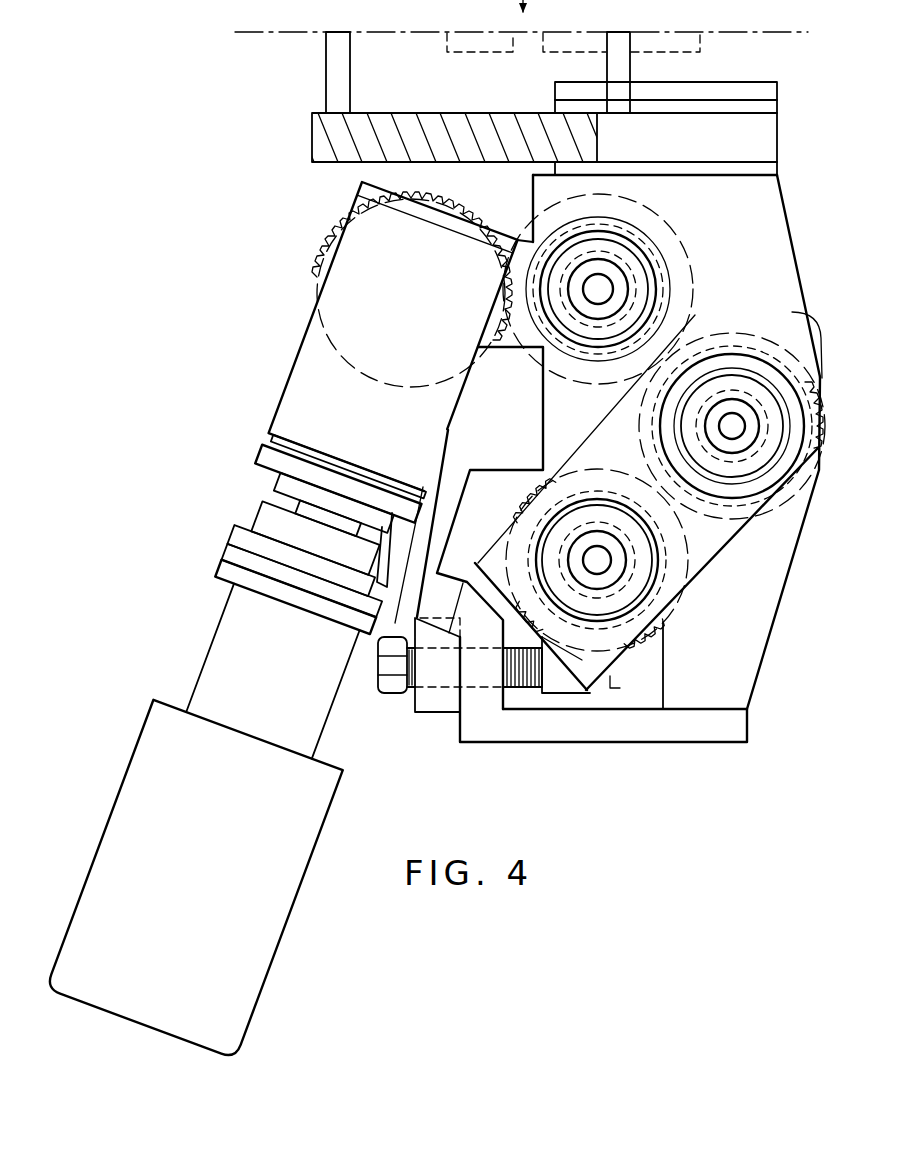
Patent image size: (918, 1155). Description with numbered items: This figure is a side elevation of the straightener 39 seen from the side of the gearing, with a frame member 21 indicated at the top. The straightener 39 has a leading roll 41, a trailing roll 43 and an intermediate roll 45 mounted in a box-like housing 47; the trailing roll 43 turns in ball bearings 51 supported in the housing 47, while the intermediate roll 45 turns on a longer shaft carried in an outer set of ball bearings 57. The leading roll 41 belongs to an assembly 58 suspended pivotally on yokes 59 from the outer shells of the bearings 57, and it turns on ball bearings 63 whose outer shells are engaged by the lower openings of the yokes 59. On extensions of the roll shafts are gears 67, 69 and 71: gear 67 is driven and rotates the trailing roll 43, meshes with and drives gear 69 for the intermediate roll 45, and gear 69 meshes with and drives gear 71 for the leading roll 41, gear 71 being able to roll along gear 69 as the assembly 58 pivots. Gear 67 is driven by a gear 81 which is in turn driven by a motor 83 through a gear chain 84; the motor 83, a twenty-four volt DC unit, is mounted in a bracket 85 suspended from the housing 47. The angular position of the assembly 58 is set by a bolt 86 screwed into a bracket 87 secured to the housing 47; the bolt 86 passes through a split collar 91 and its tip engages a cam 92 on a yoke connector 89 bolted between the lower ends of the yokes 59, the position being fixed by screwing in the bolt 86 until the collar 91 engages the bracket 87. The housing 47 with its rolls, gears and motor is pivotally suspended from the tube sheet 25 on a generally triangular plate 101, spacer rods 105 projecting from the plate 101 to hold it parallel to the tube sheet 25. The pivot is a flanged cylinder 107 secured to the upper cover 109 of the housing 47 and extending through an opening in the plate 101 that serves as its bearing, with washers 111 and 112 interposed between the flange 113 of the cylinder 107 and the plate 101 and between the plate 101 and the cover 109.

The frame member 21 is at (447, 38).
The tube sheet 25 is at (296, 33).
The straightener 39 is at (814, 596).
The leading roll 41 is at (628, 680).
The trailing roll 43 is at (650, 234).
The intermediate roll 45 is at (762, 512).
The housing 47 is at (798, 278).
The ball bearings 51 is at (633, 288).
The outer set of ball bearings 57 is at (700, 428).
The leading roll assembly 58 is at (696, 586).
The yoke 59 is at (720, 538).
The ball bearings 63 is at (562, 536).
The gear 67 is at (524, 232).
The gear 69 is at (793, 310).
The gear 71 is at (655, 644).
The gear 81 is at (340, 228).
The motor 83 is at (167, 707).
The gear chain 84 is at (260, 445).
The bracket 85 is at (310, 337).
The bolt 86 is at (378, 690).
The bracket 87 is at (645, 738).
The yoke connector 89 is at (490, 560).
The collar 91 is at (452, 708).
The cam 92 is at (560, 692).
The triangular plate 101 is at (460, 113).
The spacer rods 105 is at (326, 90).
The flanged cylinder 107 is at (728, 73).
The upper cover 109 is at (782, 190).
The washer 111 is at (764, 106).
The washer 112 is at (664, 170).
The flange 113 is at (752, 82).